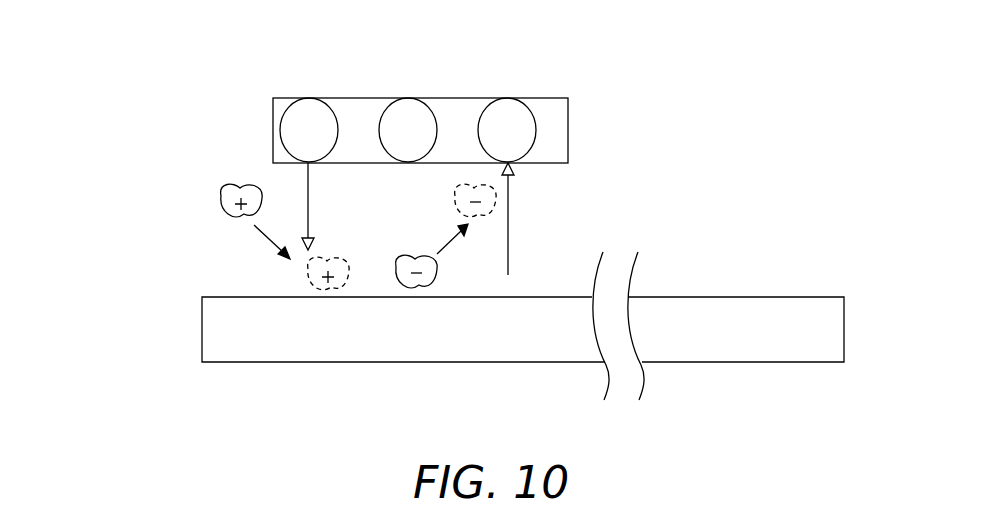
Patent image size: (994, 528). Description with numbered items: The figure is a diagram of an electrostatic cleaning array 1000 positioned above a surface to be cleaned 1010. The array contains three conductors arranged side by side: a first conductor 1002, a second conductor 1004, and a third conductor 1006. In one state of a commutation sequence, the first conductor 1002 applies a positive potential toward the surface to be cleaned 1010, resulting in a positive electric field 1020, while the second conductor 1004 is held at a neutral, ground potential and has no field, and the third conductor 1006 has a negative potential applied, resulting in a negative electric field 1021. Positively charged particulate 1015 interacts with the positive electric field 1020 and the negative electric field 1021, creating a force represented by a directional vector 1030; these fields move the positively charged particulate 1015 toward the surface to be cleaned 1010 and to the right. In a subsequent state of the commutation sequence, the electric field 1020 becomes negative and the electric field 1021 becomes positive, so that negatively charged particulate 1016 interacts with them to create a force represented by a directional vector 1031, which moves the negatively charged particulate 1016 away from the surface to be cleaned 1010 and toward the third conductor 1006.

The electrostatic cleaning array 1000 is at (156, 96).
The first conductor 1002 is at (309, 96).
The second conductor 1004 is at (408, 96).
The third conductor 1006 is at (507, 96).
The surface to be cleaned 1010 is at (826, 283).
The positively charged particulate 1015 is at (216, 197).
The negatively charged particulate 1016 is at (438, 285).
The positive electric field 1020 is at (302, 192).
The negative electric field 1021 is at (518, 185).
The directional vector 1030 is at (262, 240).
The directional vector 1031 is at (453, 247).